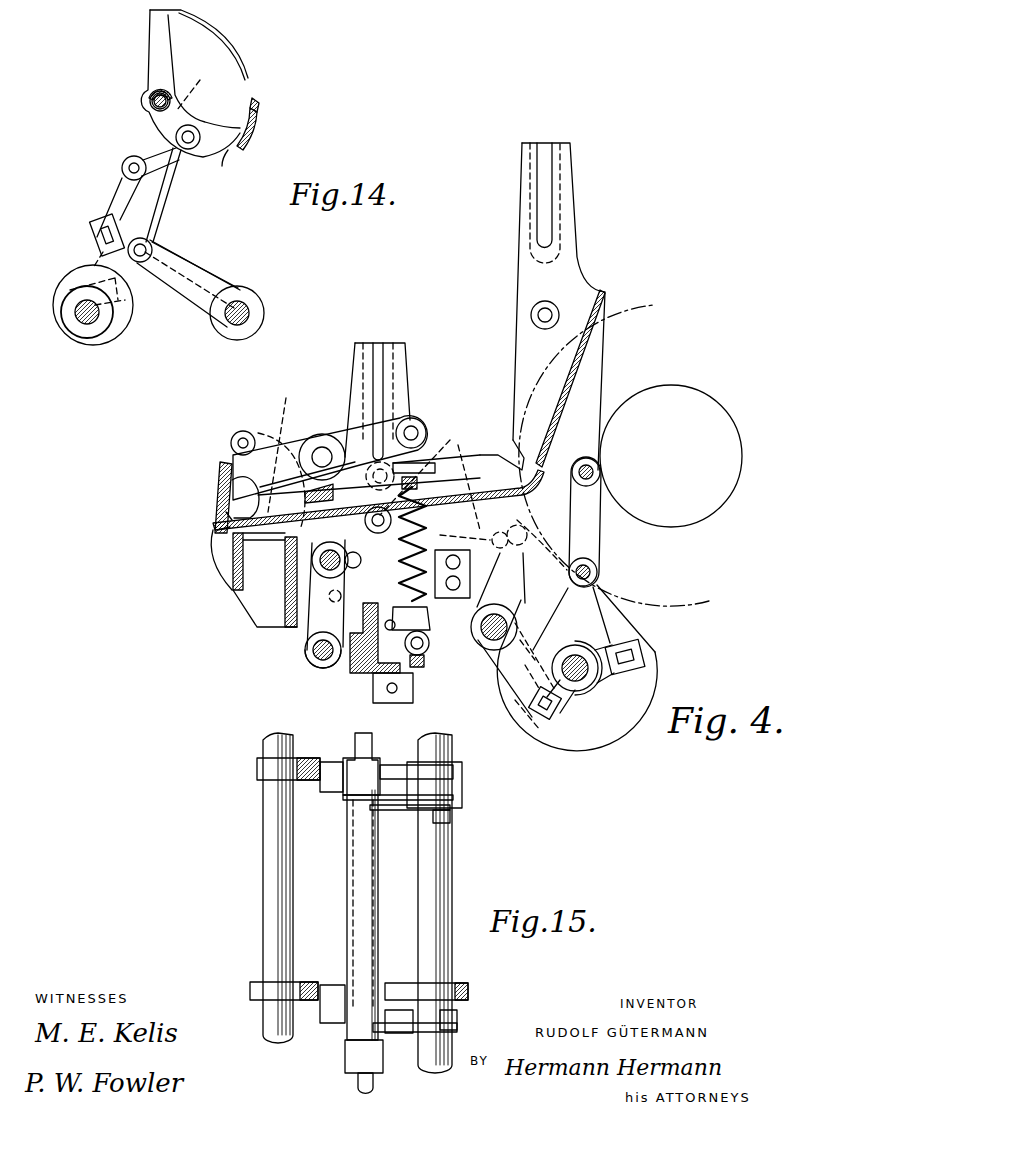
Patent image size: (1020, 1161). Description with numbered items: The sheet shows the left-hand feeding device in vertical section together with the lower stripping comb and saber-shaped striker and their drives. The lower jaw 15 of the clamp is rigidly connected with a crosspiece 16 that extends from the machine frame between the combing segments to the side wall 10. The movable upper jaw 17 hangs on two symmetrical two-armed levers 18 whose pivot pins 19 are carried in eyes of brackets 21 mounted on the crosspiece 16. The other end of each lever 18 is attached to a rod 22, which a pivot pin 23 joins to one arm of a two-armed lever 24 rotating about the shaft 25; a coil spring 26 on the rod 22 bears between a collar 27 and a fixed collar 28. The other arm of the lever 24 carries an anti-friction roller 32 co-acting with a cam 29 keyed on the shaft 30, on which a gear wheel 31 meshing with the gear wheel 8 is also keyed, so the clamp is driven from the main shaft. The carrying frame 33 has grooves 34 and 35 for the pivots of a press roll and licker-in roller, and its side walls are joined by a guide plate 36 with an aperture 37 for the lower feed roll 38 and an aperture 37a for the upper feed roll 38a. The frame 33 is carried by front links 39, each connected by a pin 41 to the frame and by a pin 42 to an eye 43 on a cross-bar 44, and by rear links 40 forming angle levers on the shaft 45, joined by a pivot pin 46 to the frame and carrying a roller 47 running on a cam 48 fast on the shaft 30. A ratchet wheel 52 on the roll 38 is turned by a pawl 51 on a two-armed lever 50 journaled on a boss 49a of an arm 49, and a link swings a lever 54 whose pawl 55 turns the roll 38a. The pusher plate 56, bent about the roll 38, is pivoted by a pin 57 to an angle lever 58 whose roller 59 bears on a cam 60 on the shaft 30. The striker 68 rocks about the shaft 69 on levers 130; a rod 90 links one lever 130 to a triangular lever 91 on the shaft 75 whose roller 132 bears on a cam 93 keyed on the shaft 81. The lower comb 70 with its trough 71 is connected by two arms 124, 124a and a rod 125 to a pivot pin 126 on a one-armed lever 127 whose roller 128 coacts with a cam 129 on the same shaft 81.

In FIG. 4, the gear wheel 8 is at (650, 323).
In FIG. 4, the side wall 10 is at (466, 455).
In FIG. 4, the lower jaw 15 is at (226, 565).
In FIG. 4, the crosspiece 16 is at (258, 627).
In FIG. 4, the upper jaw 17 is at (220, 470).
In FIG. 4, the two-armed lever 18 is at (263, 483).
In FIG. 4, the pivot pin 19 is at (320, 450).
In FIG. 4, the bracket 21 is at (372, 445).
In FIG. 4, the rod 22 is at (420, 480).
In FIG. 4, the pivot pin 23 is at (424, 668).
In FIG. 4, the two-armed lever 24 is at (485, 660).
In FIG. 4, the shaft 25 is at (512, 623).
In FIG. 4, the coil spring 26 is at (430, 510).
In FIG. 4, the collar 27 is at (430, 612).
In FIG. 4, the collar 28 is at (425, 462).
In FIG. 4, the cam 29 is at (570, 698).
In FIG. 4, the shaft 30 is at (577, 655).
In FIG. 4, the gear wheel 31 is at (603, 748).
In FIG. 4, the anti-friction roller 32 is at (545, 722).
In FIG. 4, the carrying frame 33 is at (527, 372).
In FIG. 4, the groove 34 is at (383, 395).
In FIG. 4, the groove 35 is at (555, 212).
In FIG. 4, the guide plate 36 is at (345, 510).
In FIG. 4, the aperture 37 is at (418, 430).
In FIG. 4, the aperture 37a is at (222, 512).
In FIG. 4, the lower feed roll 38 is at (300, 625).
In FIG. 4, the upper feed roll 38a is at (236, 500).
In FIG. 4, the front link 39 is at (258, 612).
In FIG. 4, the rear link 40 is at (600, 525).
In FIG. 4, the pin 41 is at (320, 568).
In FIG. 4, the pin 42 is at (322, 662).
In FIG. 4, the eye 43 is at (352, 680).
In FIG. 4, the cross-bar 44 is at (378, 705).
In FIG. 4, the shaft 45 is at (598, 568).
In FIG. 4, the pivot pin 46 is at (601, 471).
In FIG. 4, the antifriction roller 47 is at (632, 674).
In FIG. 4, the cam 48 is at (610, 674).
In FIG. 4, the arm 49 is at (483, 534).
In FIG. 4, the boss 49a is at (508, 453).
In FIG. 4, the two-armed lever 50 is at (378, 470).
In FIG. 4, the pawl 51 is at (312, 488).
In FIG. 4, the ratchet wheel 52 is at (355, 568).
In FIG. 4, the lever 54 is at (235, 445).
In FIG. 4, the pawl 55 is at (284, 445).
In FIG. 4, the pusher plate 56 is at (225, 535).
In FIG. 4, the pivot pin 57 is at (545, 535).
In FIG. 4, the angle lever 58 is at (513, 575).
In FIG. 4, the antifriction roller 59 is at (530, 673).
In FIG. 4, the cam 60 is at (528, 660).
In FIG. 14, the striker 68 is at (222, 27).
In FIG. 15, the striker 68 is at (420, 880).
In FIG. 14, the shaft 69 is at (156, 108).
In FIG. 15, the shaft 69 is at (374, 757).
In FIG. 14, the lower comb 70 is at (258, 132).
In FIG. 14, the trough 71 is at (260, 106).
In FIG. 14, the shaft 75 is at (245, 305).
In FIG. 14, the shaft 81 is at (82, 325).
In FIG. 15, the shaft 81 is at (268, 1025).
In FIG. 14, the rod 90 is at (150, 150).
In FIG. 14, the triangular one-armed lever 91 is at (120, 188).
In FIG. 15, the triangular one-armed lever 91 is at (416, 762).
In FIG. 14, the cam 93 is at (126, 303).
In FIG. 15, the cam 93 is at (257, 772).
In FIG. 14, the arm 124 is at (224, 160).
In FIG. 15, the arm 124 is at (400, 810).
In FIG. 15, the plate 124a is at (440, 790).
In FIG. 14, the rod 125 is at (152, 96).
In FIG. 15, the rod 125 is at (347, 860).
In FIG. 14, the pivot pin 126 is at (150, 245).
In FIG. 15, the pivot pin 126 is at (325, 1025).
In FIG. 14, the one-armed lever 127 is at (210, 280).
In FIG. 15, the one-armed lever 127 is at (394, 983).
In FIG. 14, the antifriction roller 128 is at (95, 235).
In FIG. 14, the cam 129 is at (75, 262).
In FIG. 15, the cam 129 is at (250, 990).
In FIG. 14, the lever 130 is at (166, 72).
In FIG. 14, the anti-friction roller 132 is at (122, 170).
In FIG. 15, the anti-friction roller 132 is at (322, 762).